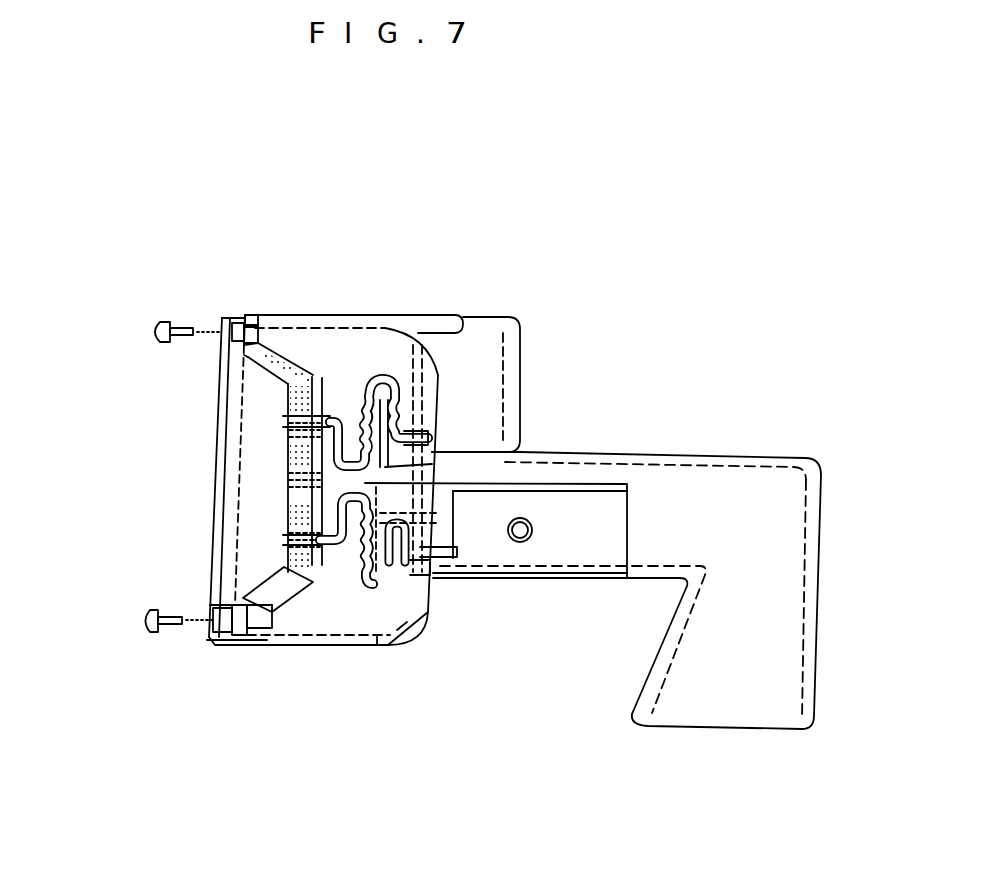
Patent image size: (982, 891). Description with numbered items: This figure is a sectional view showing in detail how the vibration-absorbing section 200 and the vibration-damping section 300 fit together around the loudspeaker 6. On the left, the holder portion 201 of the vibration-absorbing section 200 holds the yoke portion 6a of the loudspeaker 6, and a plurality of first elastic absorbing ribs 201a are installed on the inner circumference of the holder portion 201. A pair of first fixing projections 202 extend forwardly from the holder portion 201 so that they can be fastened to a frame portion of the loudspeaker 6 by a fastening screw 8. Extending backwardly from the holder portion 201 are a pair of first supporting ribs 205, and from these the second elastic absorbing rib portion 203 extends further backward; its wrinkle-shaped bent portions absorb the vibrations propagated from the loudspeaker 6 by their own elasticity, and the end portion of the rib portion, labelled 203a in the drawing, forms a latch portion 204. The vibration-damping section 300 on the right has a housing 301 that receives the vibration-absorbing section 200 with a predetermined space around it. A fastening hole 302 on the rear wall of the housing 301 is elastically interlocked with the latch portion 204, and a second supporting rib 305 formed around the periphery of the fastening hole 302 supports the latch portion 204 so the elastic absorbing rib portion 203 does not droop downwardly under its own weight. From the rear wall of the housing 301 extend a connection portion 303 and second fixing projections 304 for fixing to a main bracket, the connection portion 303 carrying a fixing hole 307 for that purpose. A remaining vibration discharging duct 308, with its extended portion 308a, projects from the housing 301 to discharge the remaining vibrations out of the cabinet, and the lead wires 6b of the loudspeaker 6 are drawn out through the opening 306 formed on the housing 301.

The loudspeaker 6 is at (262, 455).
The yoke portion 6a is at (322, 500).
The lead wires 6b is at (430, 613).
The fastening screw 8 is at (155, 330).
The vibration-absorbing section 200 is at (300, 353).
The holder portion 201 is at (288, 518).
The first elastic absorbing ribs 201a is at (293, 455).
The first fixing projections 202 is at (232, 316).
The second elastic absorbing rib portion 203 is at (388, 352).
The spring end portion 203a is at (423, 580).
The latch portion 204 is at (430, 465).
The first supporting ribs 205 is at (333, 413).
The vibration-damping section 300 is at (635, 485).
The housing 301 is at (480, 370).
The fastening hole 302 is at (430, 438).
The connection portion 303 is at (583, 538).
The second fixing projections 304 is at (453, 313).
The second supporting rib 305 is at (432, 465).
The opening 306 is at (392, 643).
The fixing hole 307 is at (520, 537).
The remaining vibration discharging duct 308 is at (775, 465).
The inclined edge portion 308a is at (752, 717).